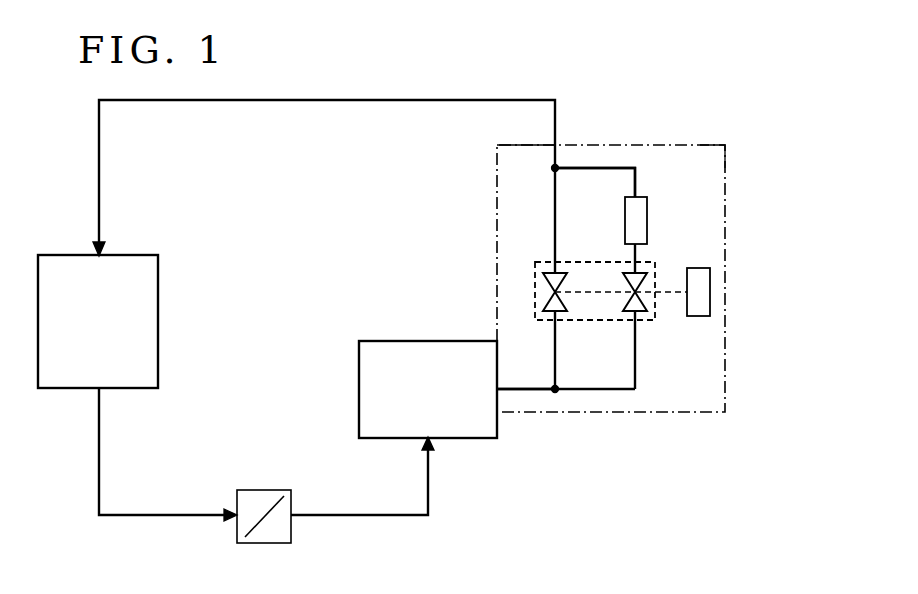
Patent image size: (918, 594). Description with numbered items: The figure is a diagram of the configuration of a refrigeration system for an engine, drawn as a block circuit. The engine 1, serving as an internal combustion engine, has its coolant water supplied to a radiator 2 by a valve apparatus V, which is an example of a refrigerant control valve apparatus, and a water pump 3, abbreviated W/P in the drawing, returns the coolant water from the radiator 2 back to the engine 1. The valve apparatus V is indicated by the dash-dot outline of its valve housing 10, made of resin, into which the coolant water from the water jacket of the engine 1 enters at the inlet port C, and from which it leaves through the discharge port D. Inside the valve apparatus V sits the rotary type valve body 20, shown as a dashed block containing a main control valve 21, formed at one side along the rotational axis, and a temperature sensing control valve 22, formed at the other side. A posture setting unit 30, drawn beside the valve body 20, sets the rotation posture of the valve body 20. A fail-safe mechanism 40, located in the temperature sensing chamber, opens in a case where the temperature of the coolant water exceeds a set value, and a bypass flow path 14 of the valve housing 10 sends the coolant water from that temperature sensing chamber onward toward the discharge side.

The engine 1 is at (467, 438).
The radiator 2 is at (158, 268).
The water pump 3 is at (245, 490).
The valve housing 10 is at (697, 413).
The bypass flow path 14 is at (613, 166).
The valve body 20 is at (643, 326).
The main control valve 21 is at (545, 272).
The temperature sensing control valve 22 is at (637, 274).
The posture setting unit 30 is at (710, 292).
The fail-safe mechanism 40 is at (647, 212).
The inlet port C is at (503, 395).
The discharge port D is at (566, 137).
The valve apparatus V is at (716, 141).